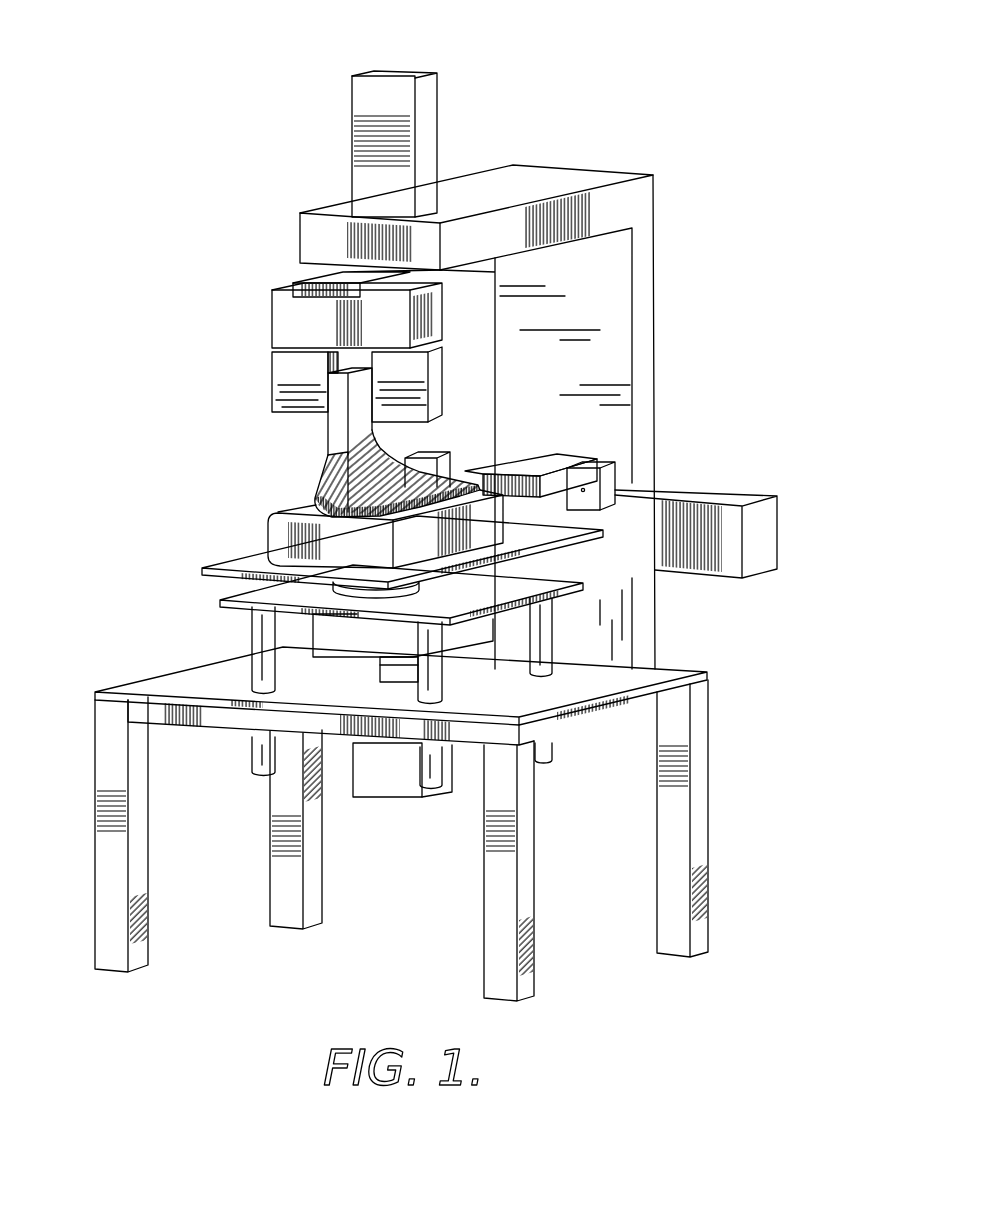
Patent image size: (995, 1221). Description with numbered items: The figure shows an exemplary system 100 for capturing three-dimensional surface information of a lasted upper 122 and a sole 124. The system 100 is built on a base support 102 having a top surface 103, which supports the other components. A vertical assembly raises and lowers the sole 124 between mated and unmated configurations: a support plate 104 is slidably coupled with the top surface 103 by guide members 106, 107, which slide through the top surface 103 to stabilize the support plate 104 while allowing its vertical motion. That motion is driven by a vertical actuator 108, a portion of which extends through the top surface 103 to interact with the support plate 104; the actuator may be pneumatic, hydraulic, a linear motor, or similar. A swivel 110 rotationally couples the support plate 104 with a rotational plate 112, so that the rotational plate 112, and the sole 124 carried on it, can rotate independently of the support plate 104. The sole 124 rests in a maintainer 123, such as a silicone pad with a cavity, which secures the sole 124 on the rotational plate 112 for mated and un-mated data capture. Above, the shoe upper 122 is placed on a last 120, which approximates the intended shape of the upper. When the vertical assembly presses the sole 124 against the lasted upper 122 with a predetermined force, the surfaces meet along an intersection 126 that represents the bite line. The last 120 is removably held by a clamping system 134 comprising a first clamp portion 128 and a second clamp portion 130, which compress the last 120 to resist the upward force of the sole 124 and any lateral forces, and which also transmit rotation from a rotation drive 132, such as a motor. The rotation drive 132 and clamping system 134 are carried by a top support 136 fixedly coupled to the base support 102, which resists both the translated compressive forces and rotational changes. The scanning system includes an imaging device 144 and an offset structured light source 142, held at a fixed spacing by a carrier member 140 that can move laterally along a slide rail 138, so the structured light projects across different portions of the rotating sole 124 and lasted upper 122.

The system 100 is at (229, 99).
The base support 102 is at (92, 765).
The top surface 103 is at (133, 690).
The support plate 104 is at (213, 603).
The guide member 106 is at (246, 633).
The guide member 107 is at (443, 667).
The vertical actuator 108 is at (384, 808).
The swivel 110 is at (358, 600).
The rotational plate 112 is at (219, 562).
The last 120 is at (324, 432).
The lasted upper 122 is at (317, 470).
The maintainer 123 is at (491, 479).
The sole 124 is at (315, 508).
The intersection 126 is at (411, 508).
The first clamp portion 128 is at (264, 378).
The second clamp portion 130 is at (454, 391).
The rotation drive 132 is at (398, 64).
The clamping system 134 is at (302, 320).
The top support 136 is at (563, 164).
The slide rail 138 is at (705, 497).
The carrier member 140 is at (556, 467).
The structured light source 142 is at (608, 458).
The imaging device 144 is at (441, 463).